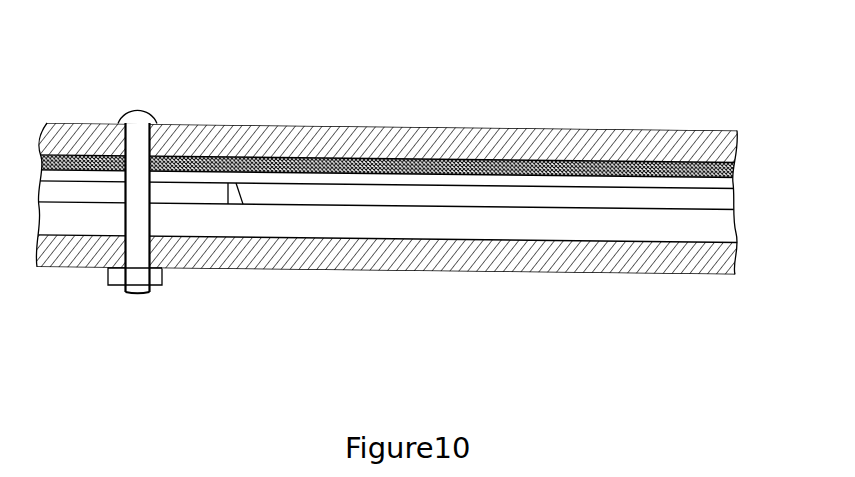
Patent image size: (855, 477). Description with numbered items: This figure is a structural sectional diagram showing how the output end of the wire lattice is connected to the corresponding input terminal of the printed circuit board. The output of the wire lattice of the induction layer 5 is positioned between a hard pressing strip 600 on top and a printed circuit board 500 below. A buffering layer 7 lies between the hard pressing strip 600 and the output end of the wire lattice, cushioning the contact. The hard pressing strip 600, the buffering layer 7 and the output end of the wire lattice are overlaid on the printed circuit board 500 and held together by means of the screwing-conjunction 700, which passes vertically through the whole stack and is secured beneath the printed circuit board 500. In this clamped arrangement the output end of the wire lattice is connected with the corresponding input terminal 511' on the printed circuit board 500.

The screwing-conjunction 700 is at (148, 120).
The hard pressing strip 600 is at (348, 125).
The buffering layer 7 is at (735, 163).
The induction layer 5 is at (497, 180).
The input terminal 511' is at (290, 294).
The printed circuit board 500 is at (658, 225).